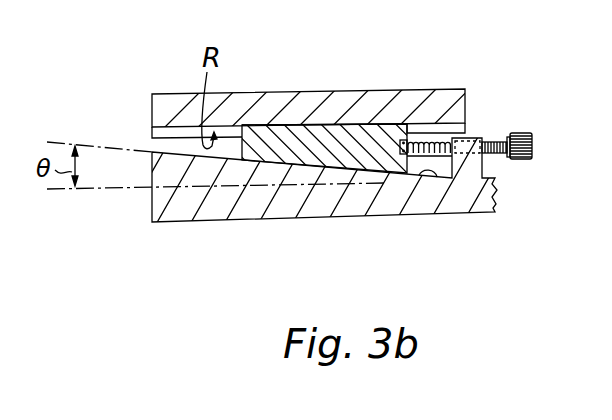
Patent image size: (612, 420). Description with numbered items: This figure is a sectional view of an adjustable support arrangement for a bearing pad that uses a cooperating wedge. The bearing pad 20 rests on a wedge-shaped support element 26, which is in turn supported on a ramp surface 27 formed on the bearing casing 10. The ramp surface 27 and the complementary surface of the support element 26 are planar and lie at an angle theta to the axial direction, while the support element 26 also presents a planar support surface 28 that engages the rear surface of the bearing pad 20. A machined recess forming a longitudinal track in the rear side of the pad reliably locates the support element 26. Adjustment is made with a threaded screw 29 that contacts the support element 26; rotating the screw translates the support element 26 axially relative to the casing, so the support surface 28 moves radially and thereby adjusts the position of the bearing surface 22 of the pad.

The bearing casing 10 is at (197, 198).
The bearing pad 20 is at (294, 85).
The bearing surface 22 is at (329, 88).
The wedge-shaped support element 26 is at (322, 145).
The ramp surface 27 is at (432, 180).
The planar support surface 28 is at (297, 124).
The threaded screw 29 is at (494, 140).